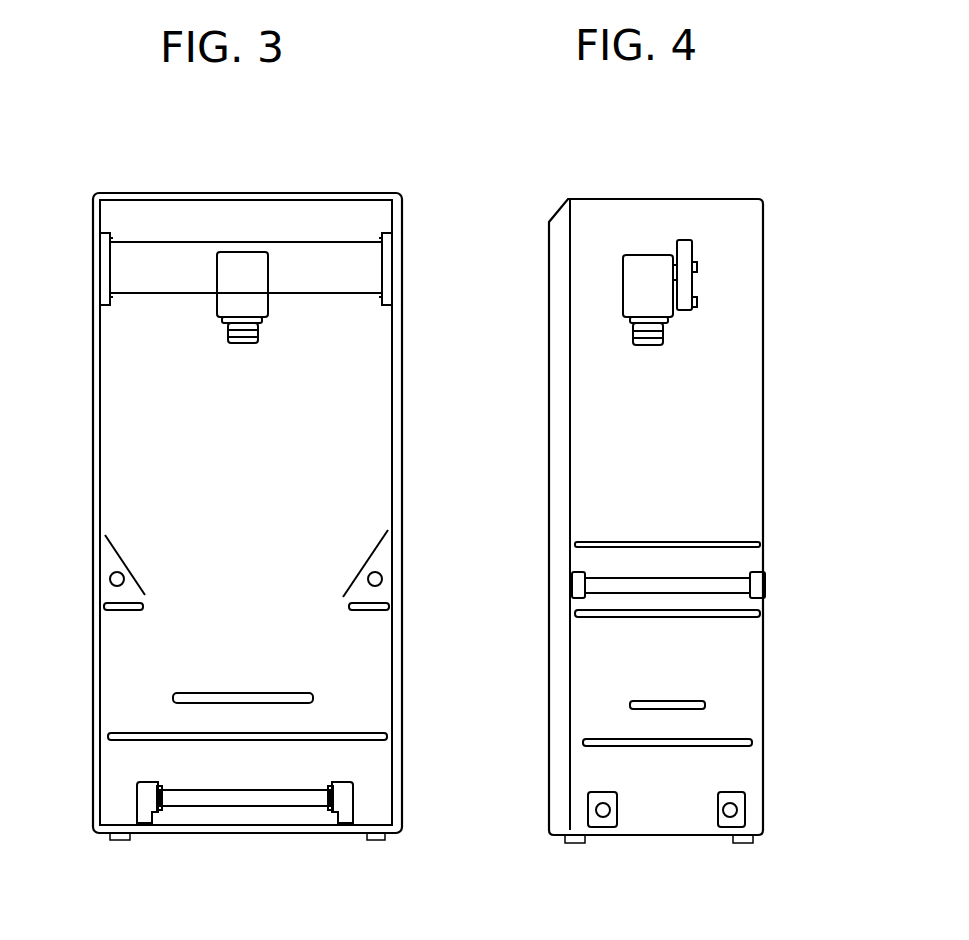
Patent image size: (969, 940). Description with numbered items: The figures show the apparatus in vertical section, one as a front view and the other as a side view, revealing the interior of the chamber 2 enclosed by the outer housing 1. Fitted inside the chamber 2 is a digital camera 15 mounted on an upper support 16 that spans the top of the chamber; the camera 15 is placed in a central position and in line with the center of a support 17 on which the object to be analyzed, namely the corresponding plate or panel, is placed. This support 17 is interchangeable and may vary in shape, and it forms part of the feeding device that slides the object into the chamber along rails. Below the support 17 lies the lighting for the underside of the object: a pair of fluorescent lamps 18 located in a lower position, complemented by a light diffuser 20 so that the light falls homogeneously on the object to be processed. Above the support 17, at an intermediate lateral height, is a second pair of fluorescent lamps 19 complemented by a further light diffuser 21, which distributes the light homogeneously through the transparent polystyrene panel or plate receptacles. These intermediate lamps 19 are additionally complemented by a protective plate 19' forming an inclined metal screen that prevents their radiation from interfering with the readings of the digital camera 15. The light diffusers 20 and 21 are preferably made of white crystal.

In FIG. 3, the housing 1 is at (402, 362).
In FIG. 4, the housing 1 is at (563, 518).
In FIG. 3, the chamber 2 is at (355, 430).
In FIG. 4, the chamber 2 is at (718, 362).
In FIG. 3, the digital camera 15 is at (243, 262).
In FIG. 4, the digital camera 15 is at (648, 268).
In FIG. 3, the upper support 16 is at (330, 255).
In FIG. 4, the upper support 16 is at (685, 250).
In FIG. 3, the support 17 is at (332, 679).
In FIG. 4, the support 17 is at (705, 705).
In FIG. 3, the fluorescent lamps 18 is at (280, 798).
In FIG. 4, the fluorescent lamps 18 is at (730, 812).
In FIG. 3, the fluorescent lamps 19 is at (264, 541).
In FIG. 4, the fluorescent lamps 19 is at (702, 512).
In FIG. 3, the protective plate 19' is at (265, 518).
In FIG. 4, the protective plate 19' is at (706, 461).
In FIG. 3, the light diffuser 20 is at (208, 736).
In FIG. 4, the light diffuser 20 is at (687, 746).
In FIG. 3, the light diffuser 21 is at (128, 605).
In FIG. 4, the light diffuser 21 is at (707, 617).